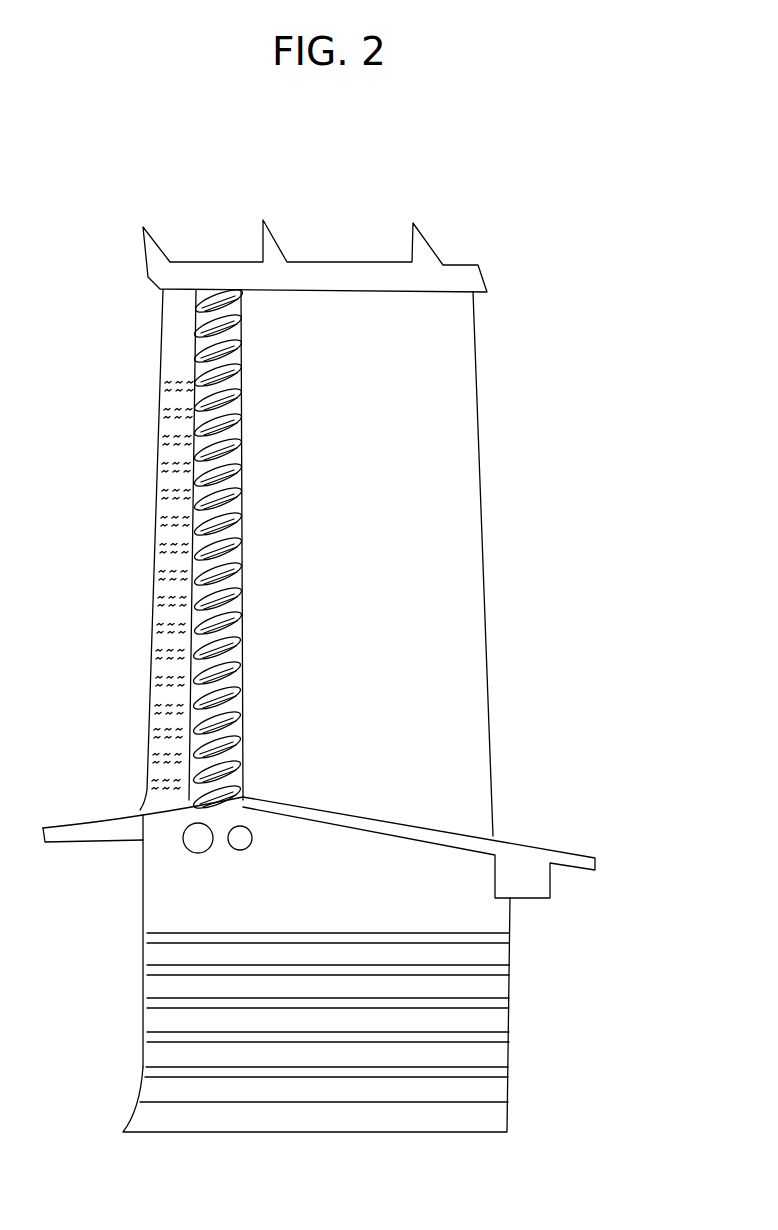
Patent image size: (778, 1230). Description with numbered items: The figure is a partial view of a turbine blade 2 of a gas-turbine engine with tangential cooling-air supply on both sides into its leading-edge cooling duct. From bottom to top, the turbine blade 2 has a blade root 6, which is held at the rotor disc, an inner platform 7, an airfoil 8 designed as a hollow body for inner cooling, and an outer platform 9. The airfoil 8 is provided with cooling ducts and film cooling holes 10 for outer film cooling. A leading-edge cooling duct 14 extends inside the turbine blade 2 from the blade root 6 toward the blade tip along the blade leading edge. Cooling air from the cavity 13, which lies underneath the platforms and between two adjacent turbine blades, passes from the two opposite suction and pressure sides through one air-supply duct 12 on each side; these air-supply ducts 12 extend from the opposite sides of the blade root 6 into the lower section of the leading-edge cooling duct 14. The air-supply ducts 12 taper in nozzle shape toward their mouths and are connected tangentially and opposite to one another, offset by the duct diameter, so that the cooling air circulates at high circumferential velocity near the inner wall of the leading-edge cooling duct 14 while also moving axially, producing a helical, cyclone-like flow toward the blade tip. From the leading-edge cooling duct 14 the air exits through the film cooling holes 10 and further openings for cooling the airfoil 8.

The turbine blade 2 is at (507, 595).
The blade root 6 is at (492, 1023).
The inner platform 7 is at (568, 858).
The airfoil 8 is at (457, 448).
The outer platform 9 is at (463, 272).
The film cooling holes 10 is at (157, 680).
The air-supply duct 12 is at (212, 850).
The cavity 13 is at (200, 890).
The leading-edge cooling duct 14 is at (160, 408).